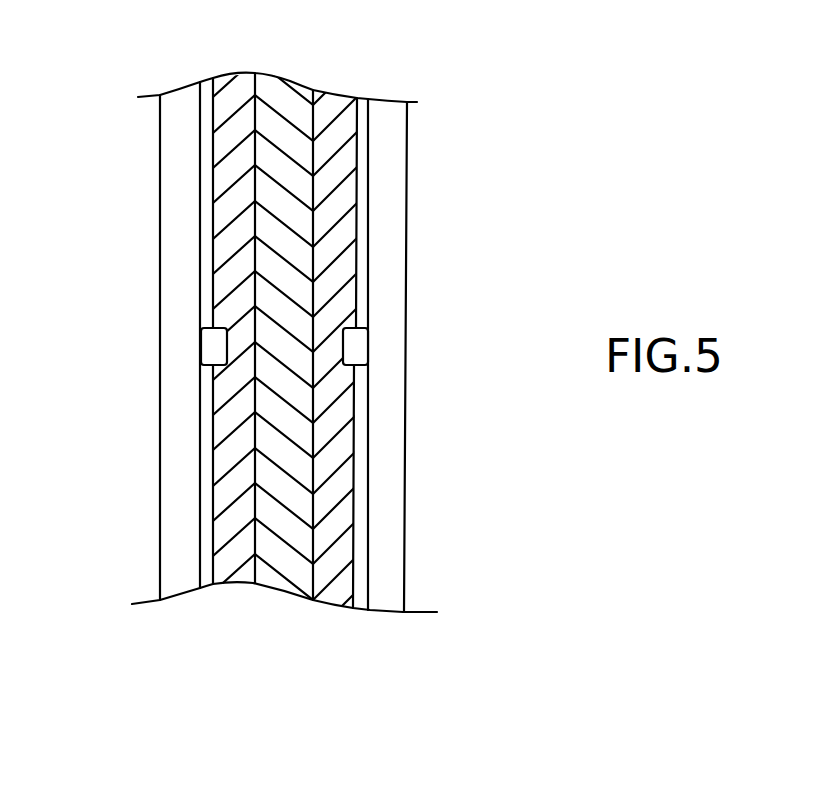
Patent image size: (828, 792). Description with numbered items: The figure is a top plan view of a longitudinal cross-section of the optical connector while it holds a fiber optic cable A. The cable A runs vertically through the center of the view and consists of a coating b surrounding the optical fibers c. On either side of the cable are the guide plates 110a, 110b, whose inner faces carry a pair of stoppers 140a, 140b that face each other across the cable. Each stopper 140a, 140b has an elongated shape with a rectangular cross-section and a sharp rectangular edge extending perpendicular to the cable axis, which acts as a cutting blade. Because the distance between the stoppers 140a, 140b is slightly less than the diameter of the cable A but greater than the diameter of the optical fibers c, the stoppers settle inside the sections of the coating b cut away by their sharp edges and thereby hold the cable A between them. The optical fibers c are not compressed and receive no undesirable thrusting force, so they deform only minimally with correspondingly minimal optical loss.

The guide plate 110a is at (173, 251).
The guide plate 110b is at (407, 248).
The stopper 140a is at (343, 329).
The stopper 140b is at (227, 328).
The coating b is at (229, 84).
The optical fibers c is at (279, 86).
The fiber optic cable A is at (215, 588).